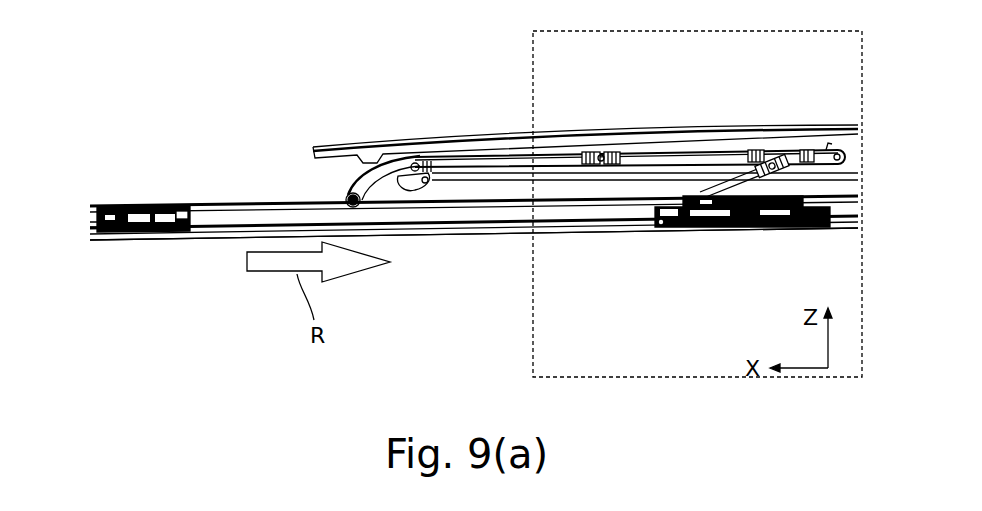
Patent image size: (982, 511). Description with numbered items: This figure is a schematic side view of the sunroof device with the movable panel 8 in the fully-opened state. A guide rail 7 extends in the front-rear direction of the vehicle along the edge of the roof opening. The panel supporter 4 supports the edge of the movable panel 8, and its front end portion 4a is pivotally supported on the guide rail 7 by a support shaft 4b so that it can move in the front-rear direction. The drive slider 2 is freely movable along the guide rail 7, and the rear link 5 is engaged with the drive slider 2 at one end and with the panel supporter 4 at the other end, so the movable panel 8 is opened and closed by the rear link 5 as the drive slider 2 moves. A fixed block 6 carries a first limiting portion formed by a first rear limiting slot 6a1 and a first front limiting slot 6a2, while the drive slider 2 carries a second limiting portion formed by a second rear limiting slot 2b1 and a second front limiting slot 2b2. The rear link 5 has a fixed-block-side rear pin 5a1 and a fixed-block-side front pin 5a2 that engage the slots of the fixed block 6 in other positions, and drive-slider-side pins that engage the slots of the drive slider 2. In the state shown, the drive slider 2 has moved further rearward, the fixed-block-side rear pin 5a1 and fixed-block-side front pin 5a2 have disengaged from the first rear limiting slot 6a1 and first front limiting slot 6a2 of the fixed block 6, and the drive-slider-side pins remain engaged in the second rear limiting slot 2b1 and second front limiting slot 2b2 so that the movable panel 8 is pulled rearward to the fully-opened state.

The drive slider 2 is at (818, 228).
The second rear limiting slot 2b1 is at (793, 226).
The second front limiting slot 2b2 is at (690, 228).
The panel supporter 4 is at (468, 147).
The front end portion 4a is at (350, 196).
The support shaft 4b is at (350, 196).
The rear link 5 is at (700, 190).
The fixed-block-side rear pin 5a1 is at (740, 182).
The fixed-block-side front pin 5a2 is at (658, 228).
The fixed block 6 is at (165, 235).
The first rear limiting slot 6a1 is at (189, 206).
The first front limiting slot 6a2 is at (130, 233).
The guide rail 7 is at (422, 232).
The movable panel 8 is at (527, 127).